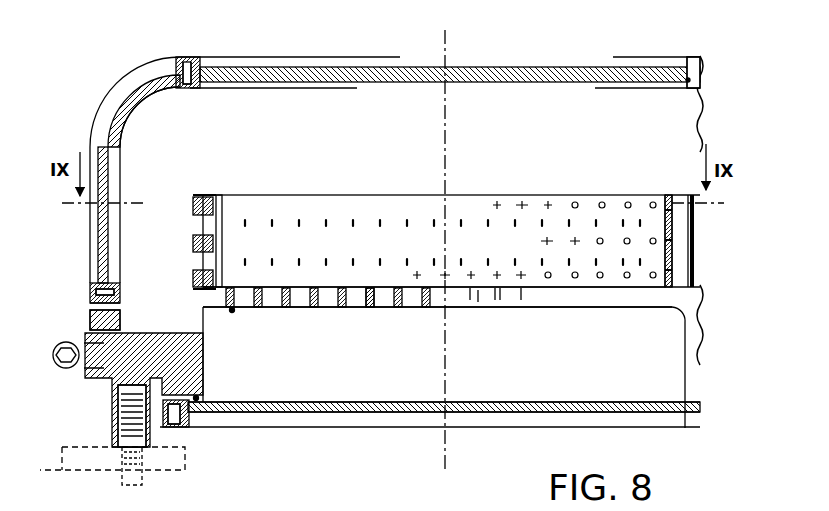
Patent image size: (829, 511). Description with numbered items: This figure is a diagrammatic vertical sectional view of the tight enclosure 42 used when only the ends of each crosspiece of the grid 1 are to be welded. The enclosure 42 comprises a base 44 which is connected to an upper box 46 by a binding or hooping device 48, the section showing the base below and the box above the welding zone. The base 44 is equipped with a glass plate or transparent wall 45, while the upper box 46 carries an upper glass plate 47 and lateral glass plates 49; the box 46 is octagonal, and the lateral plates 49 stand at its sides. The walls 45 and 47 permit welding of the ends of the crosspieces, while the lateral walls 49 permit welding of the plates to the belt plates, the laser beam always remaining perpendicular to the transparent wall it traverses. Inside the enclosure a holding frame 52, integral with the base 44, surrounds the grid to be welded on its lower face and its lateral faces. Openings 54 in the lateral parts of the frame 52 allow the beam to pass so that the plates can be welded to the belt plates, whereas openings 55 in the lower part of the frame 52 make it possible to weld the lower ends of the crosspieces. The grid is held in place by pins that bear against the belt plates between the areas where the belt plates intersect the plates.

The sample chamber 1 is at (368, 195).
The enclosure 42 is at (86, 106).
The base 44 is at (106, 390).
The glass plate or transparent wall 45 is at (314, 414).
The upper box 46 is at (122, 72).
The upper glass plate 47 is at (521, 36).
The binding or hooping device 48 is at (96, 340).
The lateral glass plates 49 is at (104, 230).
The holding frame 52 is at (236, 312).
The openings 54 is at (203, 262).
The openings 55 is at (378, 302).